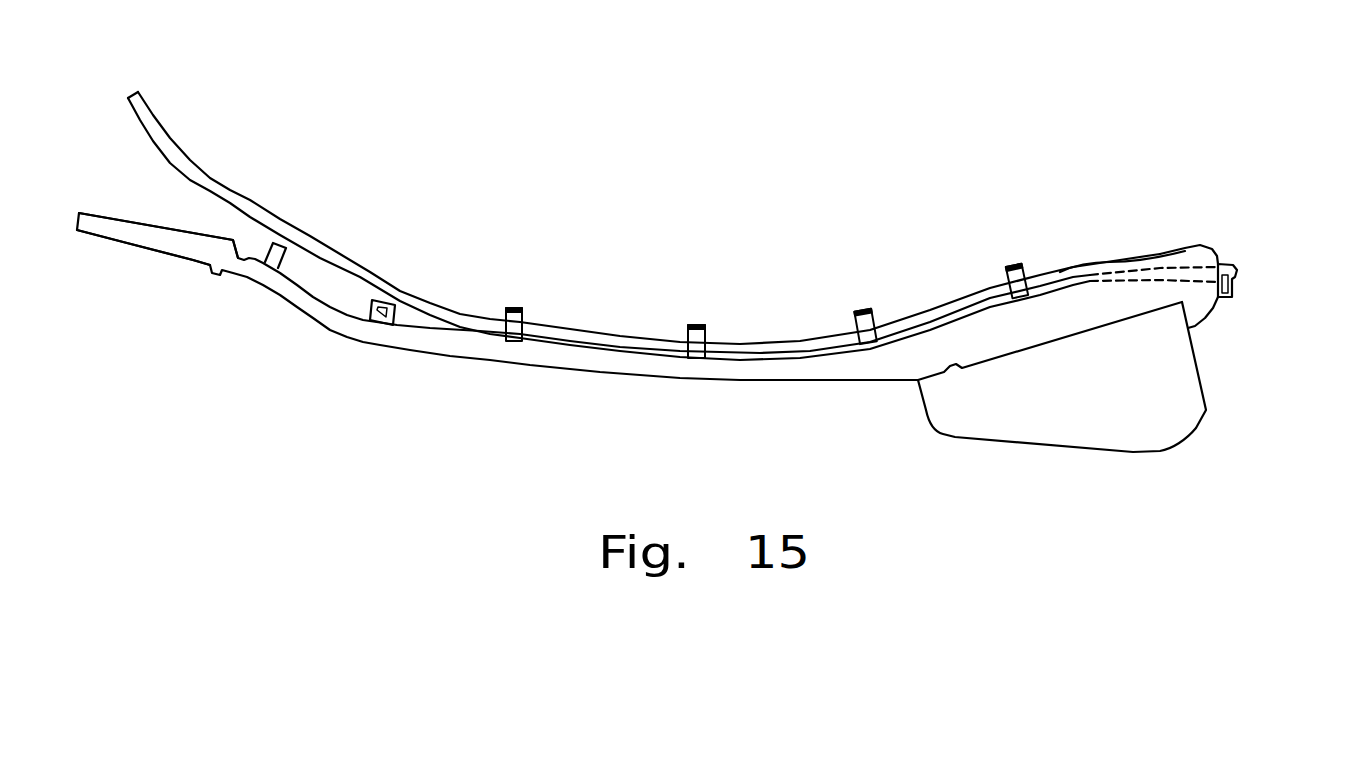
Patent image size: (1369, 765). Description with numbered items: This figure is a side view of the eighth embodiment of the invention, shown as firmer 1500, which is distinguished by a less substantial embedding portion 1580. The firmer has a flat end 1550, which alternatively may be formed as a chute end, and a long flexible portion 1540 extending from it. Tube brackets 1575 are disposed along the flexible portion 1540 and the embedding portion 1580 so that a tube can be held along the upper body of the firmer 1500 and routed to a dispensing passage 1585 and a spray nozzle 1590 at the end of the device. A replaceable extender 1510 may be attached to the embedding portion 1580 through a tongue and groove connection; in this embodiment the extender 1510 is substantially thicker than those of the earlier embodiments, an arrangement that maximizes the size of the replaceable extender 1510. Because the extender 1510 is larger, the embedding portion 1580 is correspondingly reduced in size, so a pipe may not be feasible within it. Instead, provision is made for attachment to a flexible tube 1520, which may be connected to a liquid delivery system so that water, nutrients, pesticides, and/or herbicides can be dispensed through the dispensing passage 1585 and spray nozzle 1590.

The firmer 1500 is at (716, 214).
The extender 1510 is at (1117, 430).
The flexible tube 1520 is at (183, 152).
The flexible portion 1540 is at (627, 372).
The flat end 1550 is at (194, 253).
The tube brackets 1575 is at (690, 324).
The embedding portion 1580 is at (1085, 295).
The dispensing passage 1585 is at (1173, 270).
The spray nozzle 1590 is at (1238, 275).